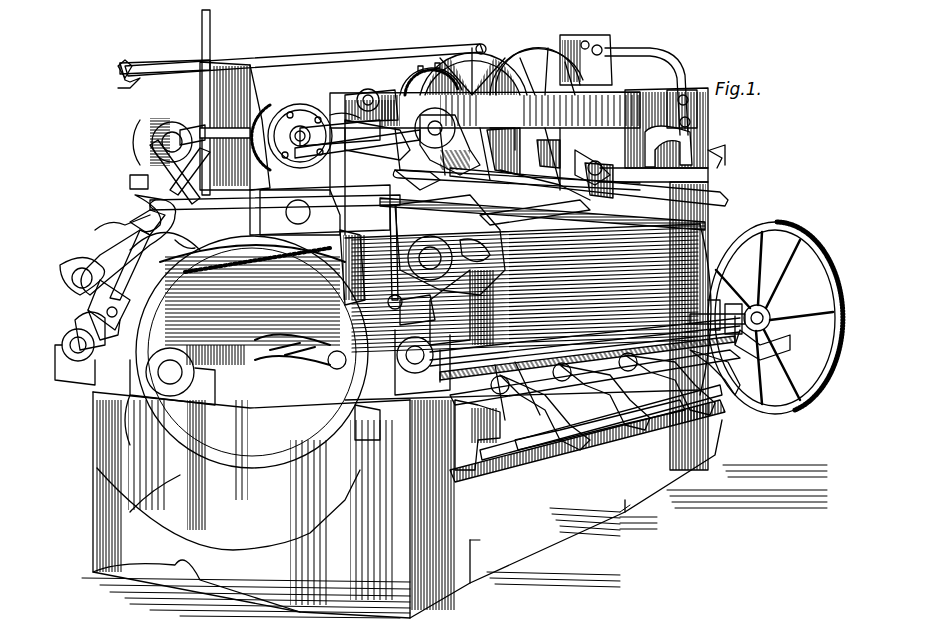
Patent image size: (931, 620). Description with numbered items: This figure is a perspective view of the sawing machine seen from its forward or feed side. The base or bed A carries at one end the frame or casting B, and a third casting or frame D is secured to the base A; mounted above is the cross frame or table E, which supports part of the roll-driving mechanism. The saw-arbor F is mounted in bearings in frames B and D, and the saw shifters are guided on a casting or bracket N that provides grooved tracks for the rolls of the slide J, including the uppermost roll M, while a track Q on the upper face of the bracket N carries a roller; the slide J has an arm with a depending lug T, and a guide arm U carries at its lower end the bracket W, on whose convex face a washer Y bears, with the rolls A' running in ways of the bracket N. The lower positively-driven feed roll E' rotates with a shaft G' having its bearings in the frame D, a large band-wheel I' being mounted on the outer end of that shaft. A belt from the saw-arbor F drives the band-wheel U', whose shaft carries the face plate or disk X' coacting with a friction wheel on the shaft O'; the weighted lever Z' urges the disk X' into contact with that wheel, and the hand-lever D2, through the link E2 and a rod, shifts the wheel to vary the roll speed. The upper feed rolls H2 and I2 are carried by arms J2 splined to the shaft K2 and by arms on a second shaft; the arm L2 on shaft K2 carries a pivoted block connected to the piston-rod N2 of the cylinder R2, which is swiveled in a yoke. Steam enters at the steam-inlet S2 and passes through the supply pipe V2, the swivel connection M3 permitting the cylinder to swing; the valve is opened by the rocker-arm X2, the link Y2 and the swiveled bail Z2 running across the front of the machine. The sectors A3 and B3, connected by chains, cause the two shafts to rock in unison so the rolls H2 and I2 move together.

The base or bed A is at (454, 505).
The roll A' is at (601, 451).
The sector A3 is at (595, 170).
The frame or casting B is at (340, 290).
The sector B3 is at (530, 205).
The casting or frame D is at (575, 355).
The hand-lever D2 is at (398, 45).
The cross frame or table E is at (650, 279).
The lower feed roll E' is at (585, 333).
The link E2 is at (160, 90).
The saw-arbor F is at (168, 395).
The shaft G' is at (421, 366).
The bearing G'' is at (73, 368).
The upper feed roll H2 is at (605, 208).
The band-wheel I' is at (766, 329).
The upper feed roll I2 is at (135, 205).
The frame or slide J is at (520, 380).
The arm J2 is at (430, 235).
The shaft K2 is at (312, 240).
The arm L2 is at (400, 172).
The roll M is at (478, 428).
The swivel connection M3 is at (172, 140).
The casting or bracket N is at (555, 455).
The piston-rod N2 is at (352, 140).
The shaft O' is at (371, 88).
The track Q is at (196, 125).
The cylinder R2 is at (278, 108).
The steam-inlet S2 is at (212, 44).
The depending lug T is at (480, 470).
The guide arm U is at (601, 417).
The band-wheel U' is at (551, 50).
The supply pipe V2 is at (142, 165).
The bracket W is at (600, 460).
The face plate or disk X' is at (516, 106).
The rocker-arm X2 is at (170, 215).
The washer Y is at (655, 435).
The link Y2 is at (280, 205).
The weighted lever Z' is at (663, 92).
The swiveled frame or bail Z2 is at (730, 200).